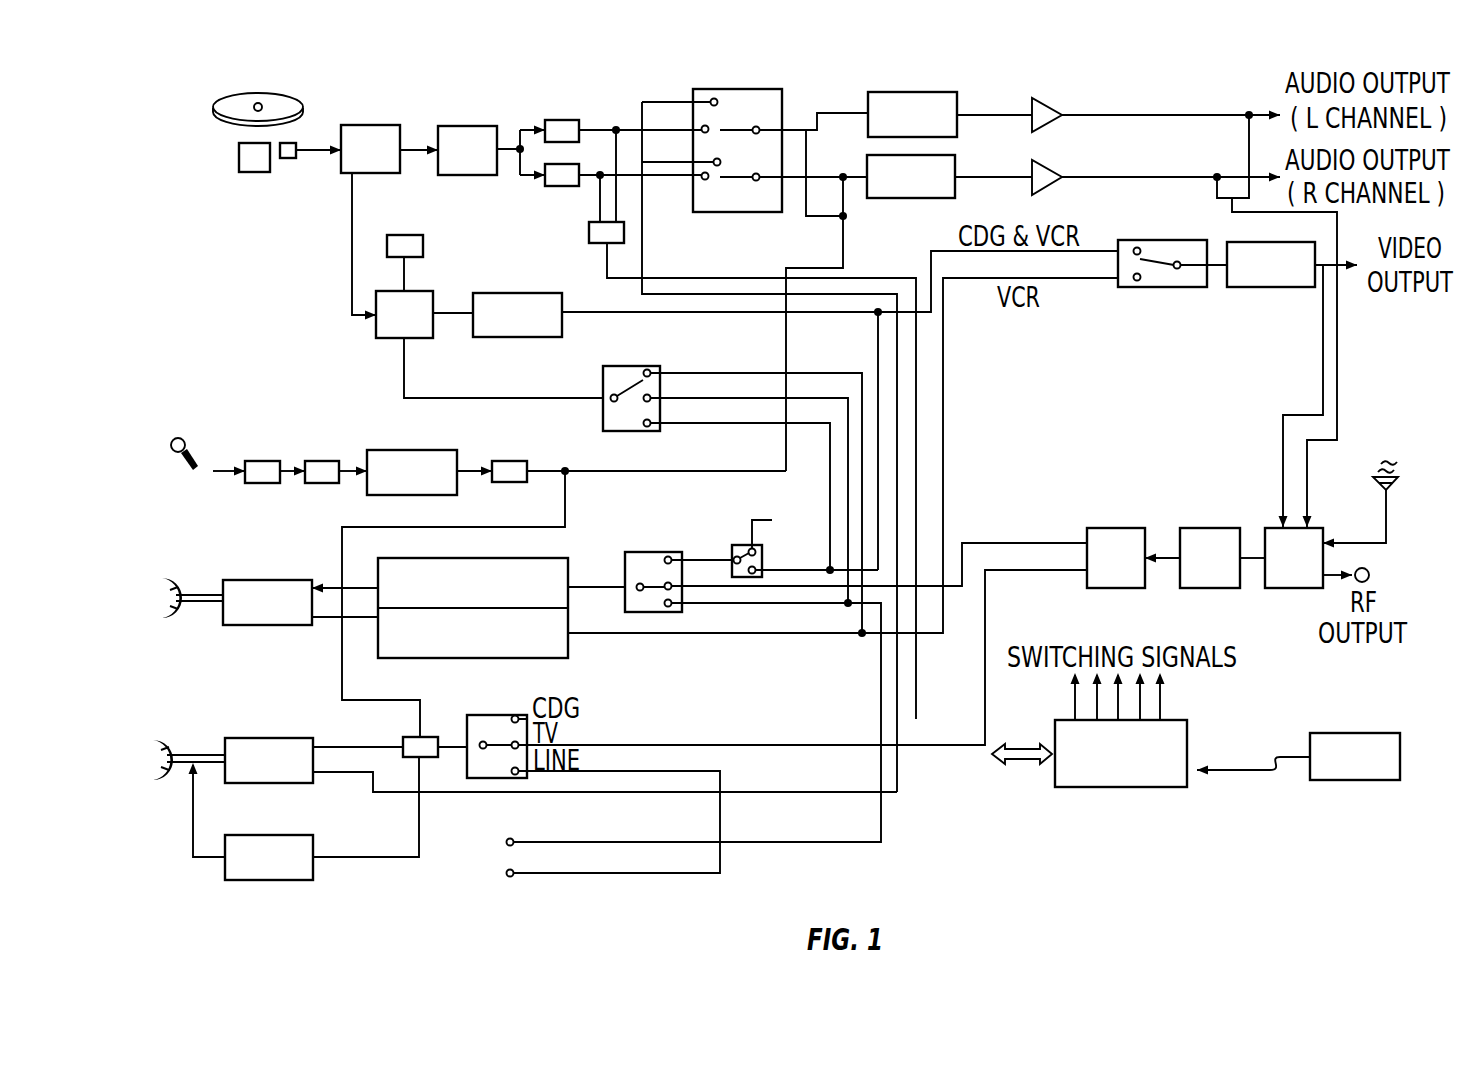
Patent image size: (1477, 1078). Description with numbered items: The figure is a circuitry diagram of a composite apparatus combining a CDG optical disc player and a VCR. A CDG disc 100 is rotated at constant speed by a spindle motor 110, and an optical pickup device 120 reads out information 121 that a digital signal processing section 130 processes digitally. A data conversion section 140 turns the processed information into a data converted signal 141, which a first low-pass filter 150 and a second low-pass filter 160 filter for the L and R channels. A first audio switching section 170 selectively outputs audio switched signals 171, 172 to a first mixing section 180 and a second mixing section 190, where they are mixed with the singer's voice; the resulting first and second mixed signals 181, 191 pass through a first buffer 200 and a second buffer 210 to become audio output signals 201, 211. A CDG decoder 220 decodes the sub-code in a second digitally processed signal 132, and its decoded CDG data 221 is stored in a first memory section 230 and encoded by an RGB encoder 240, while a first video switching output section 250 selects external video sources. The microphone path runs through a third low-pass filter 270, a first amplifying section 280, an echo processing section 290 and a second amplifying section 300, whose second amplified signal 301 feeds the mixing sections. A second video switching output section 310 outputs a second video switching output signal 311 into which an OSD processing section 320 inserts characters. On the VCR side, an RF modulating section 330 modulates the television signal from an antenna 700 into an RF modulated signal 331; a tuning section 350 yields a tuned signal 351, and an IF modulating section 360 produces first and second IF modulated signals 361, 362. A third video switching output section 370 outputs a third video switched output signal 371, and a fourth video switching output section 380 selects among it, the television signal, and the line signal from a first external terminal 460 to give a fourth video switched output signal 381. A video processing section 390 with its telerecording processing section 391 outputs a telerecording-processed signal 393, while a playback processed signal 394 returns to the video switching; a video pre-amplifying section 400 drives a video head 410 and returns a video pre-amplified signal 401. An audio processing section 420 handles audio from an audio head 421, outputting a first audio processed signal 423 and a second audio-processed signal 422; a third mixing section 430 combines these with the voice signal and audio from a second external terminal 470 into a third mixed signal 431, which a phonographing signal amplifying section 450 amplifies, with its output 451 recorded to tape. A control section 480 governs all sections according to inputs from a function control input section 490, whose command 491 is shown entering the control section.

The CDG disc 100 is at (282, 104).
The spindle motor 110 is at (260, 172).
The optical pickup device 120 is at (280, 162).
The information 121 is at (322, 153).
The digital signal processing section 130 is at (355, 125).
The second digitally processed signal 132 is at (350, 240).
The data conversion section 140 is at (454, 127).
The data converted signal 141 is at (505, 148).
The first low-pass filter 150 is at (557, 120).
The second low-pass filter 160 is at (565, 187).
The first audio switching section 170 is at (730, 89).
The audio switched signal 171 is at (788, 128).
The audio switched signal 172 is at (783, 177).
The first mixing section 180 is at (905, 90).
The first mixed signal 181 is at (975, 113).
The second mixing section 190 is at (927, 200).
The second mixed signal 191 is at (975, 175).
The first buffer 200 is at (1048, 105).
The audio output signal 201 is at (1127, 114).
The second buffer 210 is at (1047, 170).
The audio output signal 211 is at (1127, 176).
The CDG decoder 220 is at (397, 340).
The decoded CDG data 221 is at (440, 312).
The first memory section 230 is at (405, 233).
The RGB encoder 240 is at (517, 293).
The first video switching output section 250 is at (633, 366).
The third low-pass filter 270 is at (188, 438).
The first amplifying section 280 is at (320, 461).
The echo processing section 290 is at (408, 450).
The second amplifying section 300 is at (497, 447).
The second amplified signal 301 is at (547, 471).
The second video switching output section 310 is at (1163, 287).
The second video switching output signal 311 is at (1212, 260).
The OSD processing section 320 is at (1273, 287).
The RF modulating section 330 is at (1318, 588).
The RF modulated signal 331 is at (1260, 560).
The tuning section 350 is at (1193, 588).
The tuned signal 351 is at (1162, 555).
The IF modulating section 360 is at (1108, 528).
The first IF modulated signal 361 is at (997, 543).
The second IF modulated signal 362 is at (1077, 572).
The third video switching output section 370 is at (740, 545).
The third video switched output signal 371 is at (692, 558).
The fourth video switching output section 380 is at (637, 552).
The fourth video switched output signal 381 is at (583, 585).
The video processing section 390 is at (552, 556).
The telerecording processing section 391 is at (570, 643).
The telerecording-processed signal 393 is at (355, 585).
The playback processed signal 394 is at (627, 635).
The video pre-amplifying section 400 is at (263, 580).
The video pre-amplified signal 401 is at (330, 618).
The video head 410 is at (170, 580).
The audio processing section 420 is at (263, 738).
The audio head 421 is at (165, 742).
The second audio-processed signal 422 is at (338, 746).
The first audio processed signal 423 is at (338, 773).
The third mixing section 430 is at (425, 737).
The third mixed signal 431 is at (452, 743).
The phonographing signal amplifying section 450 is at (270, 835).
The feedback output line 451 is at (207, 857).
The first external terminal 460 is at (513, 838).
The second external terminal 470 is at (513, 877).
The control section 480 is at (1115, 788).
The function control input section 490 is at (1353, 735).
The remote control signal 491 is at (1263, 777).
The antenna 700 is at (1397, 478).